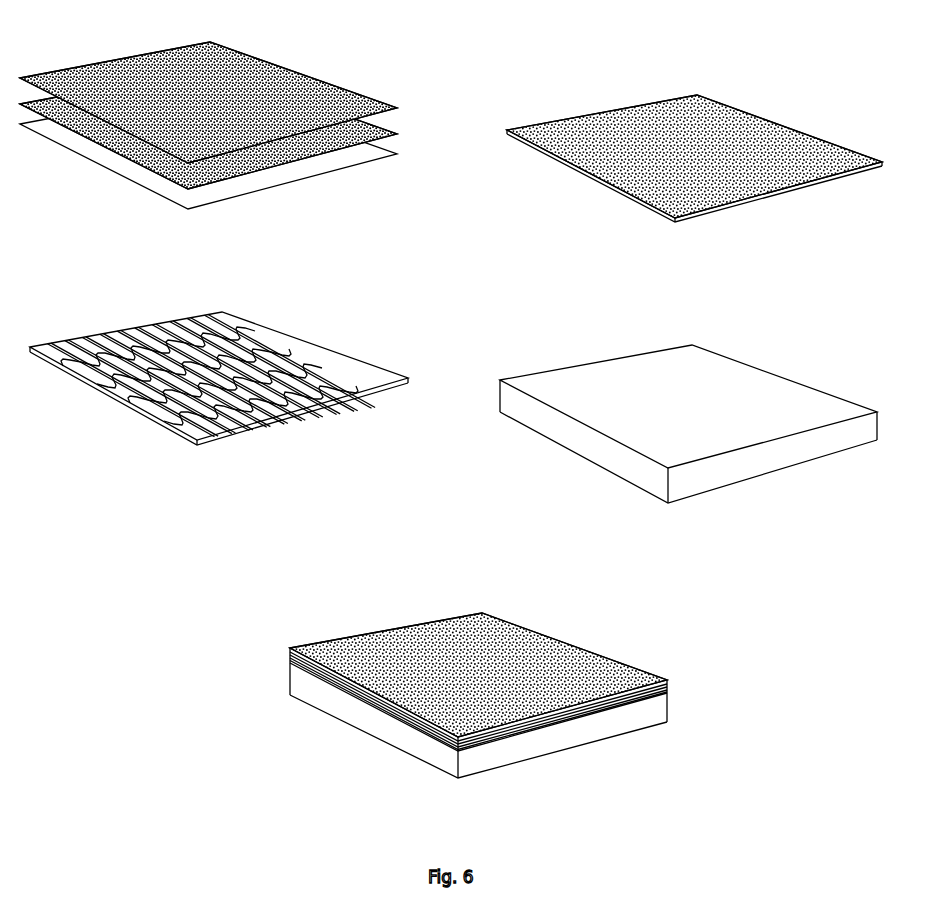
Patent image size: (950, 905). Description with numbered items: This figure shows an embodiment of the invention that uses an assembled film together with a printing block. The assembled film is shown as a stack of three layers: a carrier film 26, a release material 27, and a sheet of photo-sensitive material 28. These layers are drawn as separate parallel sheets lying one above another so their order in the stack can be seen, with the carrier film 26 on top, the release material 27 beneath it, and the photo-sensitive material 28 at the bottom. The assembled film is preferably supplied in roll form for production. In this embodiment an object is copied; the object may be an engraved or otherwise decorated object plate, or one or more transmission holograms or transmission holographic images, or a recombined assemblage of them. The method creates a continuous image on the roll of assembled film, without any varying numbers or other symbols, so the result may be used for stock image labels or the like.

The carrier film 26 is at (330, 95).
The release material 27 is at (347, 135).
The sheet of photo-sensitive material 28 is at (307, 173).